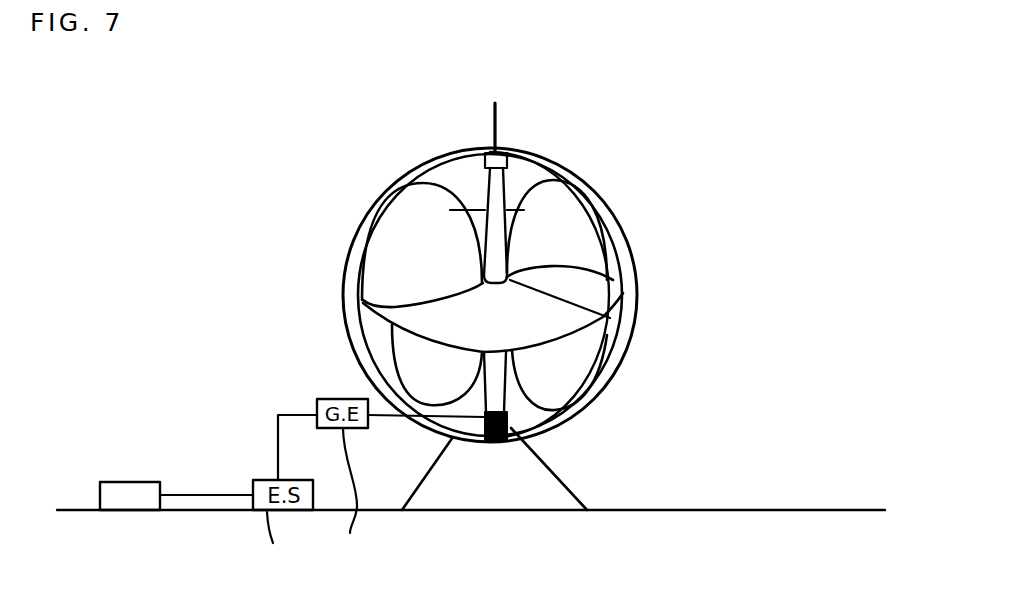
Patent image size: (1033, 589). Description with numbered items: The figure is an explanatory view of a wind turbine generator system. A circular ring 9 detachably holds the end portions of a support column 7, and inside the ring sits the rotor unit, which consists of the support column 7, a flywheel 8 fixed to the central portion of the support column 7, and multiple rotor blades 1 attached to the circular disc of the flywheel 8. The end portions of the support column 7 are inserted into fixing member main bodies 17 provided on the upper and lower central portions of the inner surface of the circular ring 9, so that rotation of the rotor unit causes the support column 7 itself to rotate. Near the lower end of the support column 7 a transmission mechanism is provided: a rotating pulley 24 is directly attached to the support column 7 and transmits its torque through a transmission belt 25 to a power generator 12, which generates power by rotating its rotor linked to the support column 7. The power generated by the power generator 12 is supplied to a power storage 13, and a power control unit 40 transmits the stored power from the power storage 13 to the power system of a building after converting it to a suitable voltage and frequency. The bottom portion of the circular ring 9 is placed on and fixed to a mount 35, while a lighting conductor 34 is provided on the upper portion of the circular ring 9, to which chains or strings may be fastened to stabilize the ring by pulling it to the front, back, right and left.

The rotor blade 1 is at (380, 257).
The support column 7 is at (495, 195).
The flywheel 8 is at (550, 328).
The circular ring 9 is at (342, 297).
The power generator 12 is at (352, 497).
The power storage 13 is at (271, 539).
The fixing member main body 17 is at (493, 152).
The rotating pulley 24 is at (507, 423).
The transmission belt 25 is at (380, 418).
The lighting conductor 34 is at (498, 120).
The mount 35 is at (423, 483).
The power control unit 40 is at (100, 482).